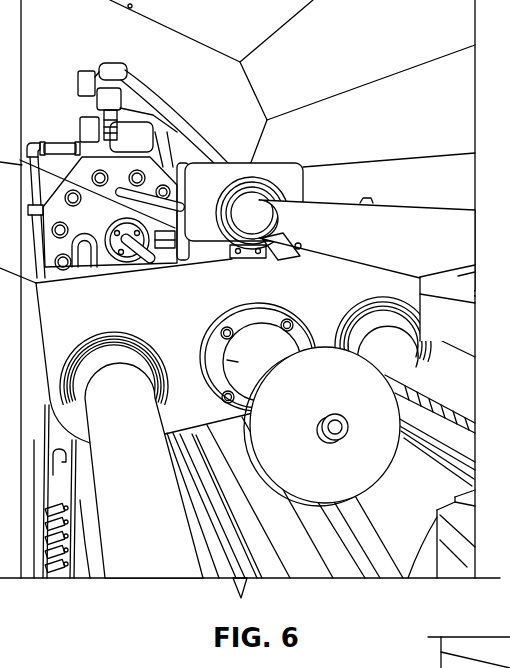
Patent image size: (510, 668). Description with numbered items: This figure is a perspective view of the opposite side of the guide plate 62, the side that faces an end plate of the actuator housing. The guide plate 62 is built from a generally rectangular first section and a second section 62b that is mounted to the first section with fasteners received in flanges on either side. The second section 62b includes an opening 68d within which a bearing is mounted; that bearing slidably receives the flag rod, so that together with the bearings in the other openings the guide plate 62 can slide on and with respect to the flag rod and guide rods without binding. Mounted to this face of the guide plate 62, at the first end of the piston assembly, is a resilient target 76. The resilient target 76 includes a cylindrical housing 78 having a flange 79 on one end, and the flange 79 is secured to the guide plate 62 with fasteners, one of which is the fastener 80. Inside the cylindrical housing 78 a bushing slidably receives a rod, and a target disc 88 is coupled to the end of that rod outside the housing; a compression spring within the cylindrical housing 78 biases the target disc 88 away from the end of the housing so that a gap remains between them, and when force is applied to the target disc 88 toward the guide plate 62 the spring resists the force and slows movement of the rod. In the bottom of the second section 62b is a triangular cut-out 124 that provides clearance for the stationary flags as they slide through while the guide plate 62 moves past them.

The guide plate 62 is at (72, 315).
The second section 62b is at (203, 180).
The opening 68d is at (268, 183).
The resilient target 76 is at (208, 352).
The cylindrical housing 78 is at (306, 347).
The flange 79 is at (258, 323).
The fastener 80 is at (221, 330).
The target disc 88 is at (366, 462).
The triangular cut-out 124 is at (268, 255).